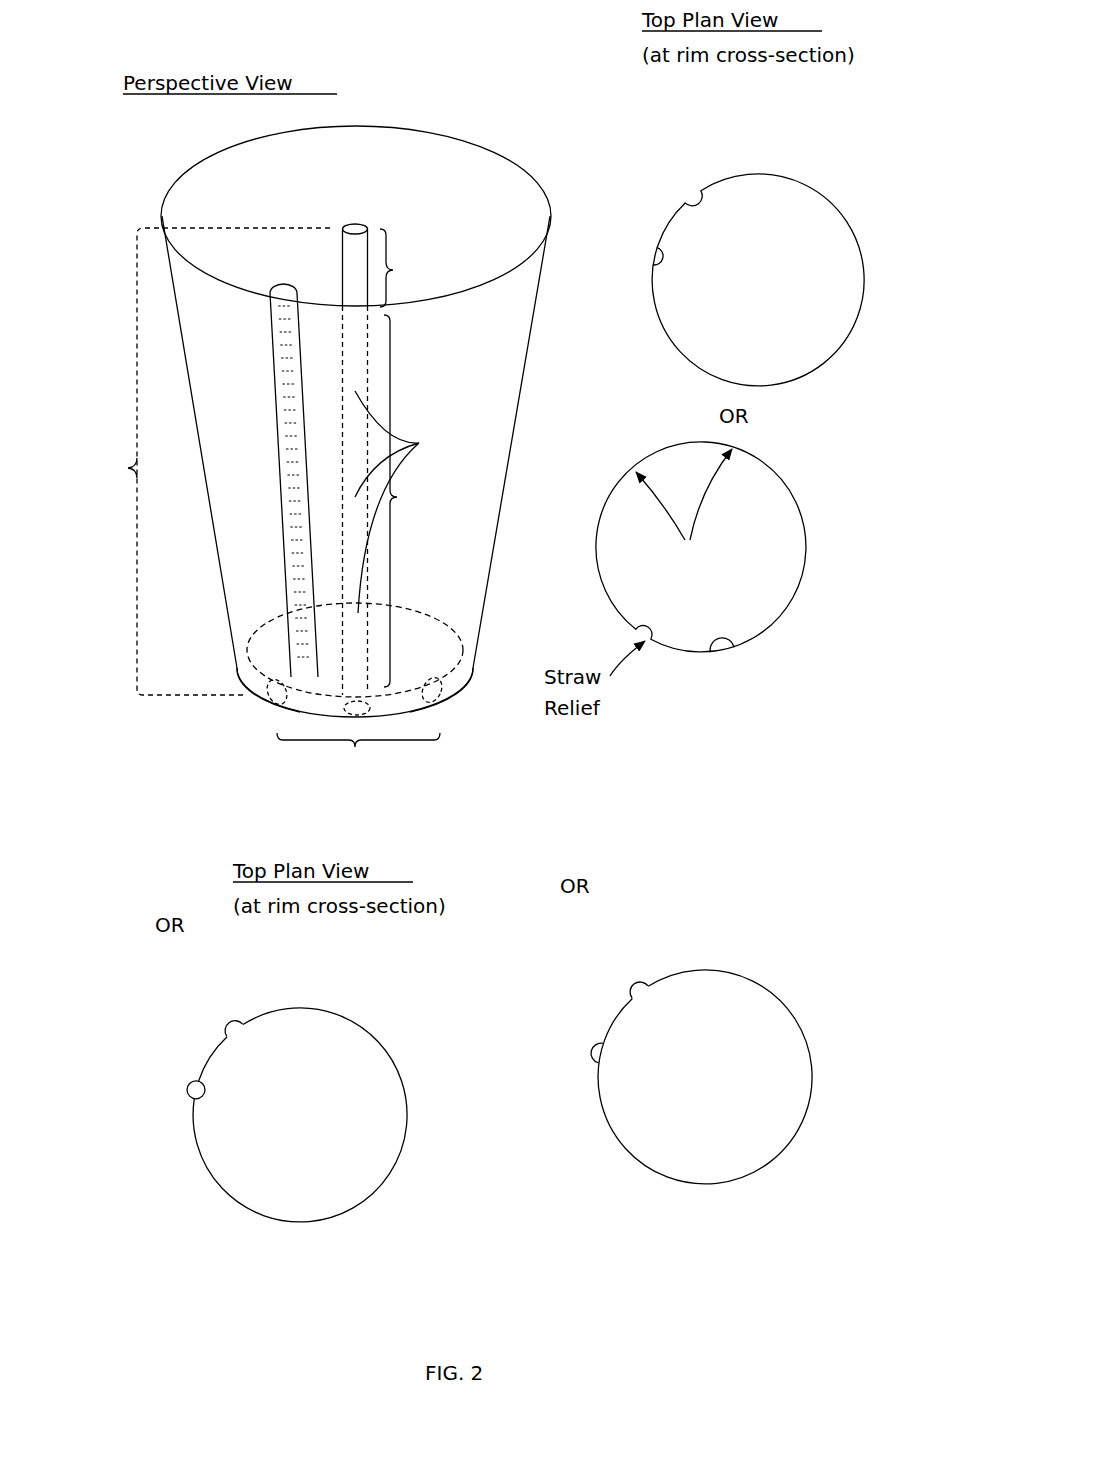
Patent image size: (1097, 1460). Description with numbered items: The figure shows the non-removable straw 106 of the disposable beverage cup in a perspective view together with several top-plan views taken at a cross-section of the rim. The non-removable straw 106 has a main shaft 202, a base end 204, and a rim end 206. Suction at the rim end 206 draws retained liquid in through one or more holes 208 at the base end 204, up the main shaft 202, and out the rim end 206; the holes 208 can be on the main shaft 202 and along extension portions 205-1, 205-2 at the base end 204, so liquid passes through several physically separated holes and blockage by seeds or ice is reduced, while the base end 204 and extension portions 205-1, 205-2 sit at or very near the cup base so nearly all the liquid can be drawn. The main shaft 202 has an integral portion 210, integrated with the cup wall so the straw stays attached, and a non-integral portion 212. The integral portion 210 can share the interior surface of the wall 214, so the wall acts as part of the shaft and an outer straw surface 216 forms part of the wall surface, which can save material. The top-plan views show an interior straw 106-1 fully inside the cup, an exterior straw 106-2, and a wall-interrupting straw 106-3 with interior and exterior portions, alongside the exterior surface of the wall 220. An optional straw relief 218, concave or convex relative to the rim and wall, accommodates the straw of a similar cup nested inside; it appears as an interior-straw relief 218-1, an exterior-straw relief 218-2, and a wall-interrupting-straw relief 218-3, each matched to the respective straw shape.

The non-removable straw 106 is at (366, 373).
The interior straw 106-1 is at (650, 253).
The exterior straw 106-2 is at (585, 1042).
The wall-interrupting straw 106-3 is at (178, 1080).
The main shaft 202 is at (104, 516).
The base end 204 is at (425, 778).
The extension portion 205-1 is at (297, 710).
The extension portion 205-2 is at (425, 705).
The rim end 206 is at (553, 103).
The holes 208 is at (472, 601).
The integral portion 210 is at (397, 497).
The non-integral portion 212 is at (437, 299).
The interior surface of the wall 214 is at (459, 438).
The outer straw surface 216 is at (725, 657).
The straw relief 218 is at (282, 273).
The interior-straw relief 218-1 is at (688, 192).
The exterior-straw relief 218-2 is at (723, 925).
The wall-interrupting-straw relief 218-3 is at (317, 963).
The exterior surface of the wall 220 is at (812, 555).